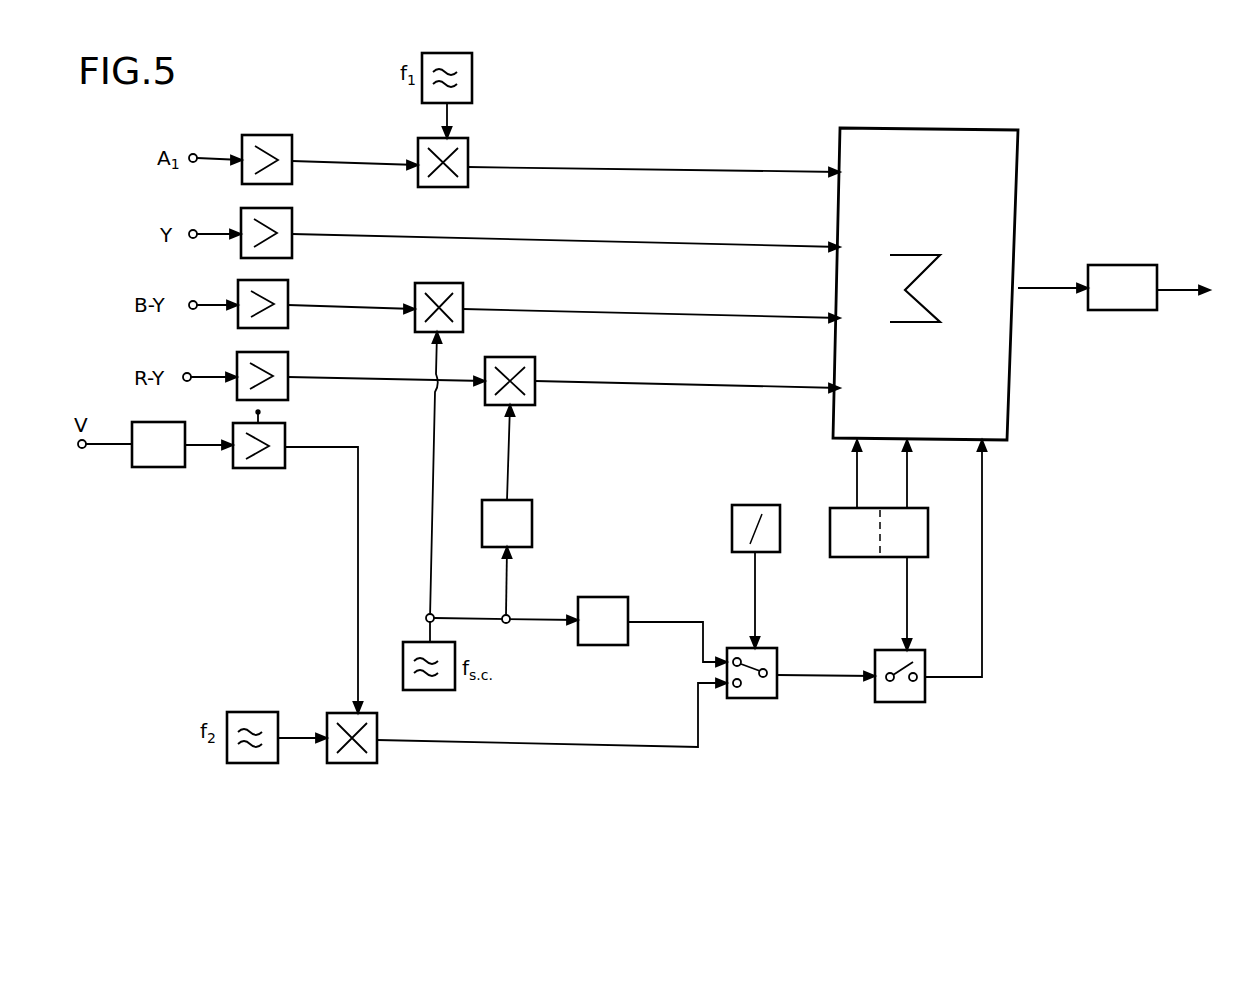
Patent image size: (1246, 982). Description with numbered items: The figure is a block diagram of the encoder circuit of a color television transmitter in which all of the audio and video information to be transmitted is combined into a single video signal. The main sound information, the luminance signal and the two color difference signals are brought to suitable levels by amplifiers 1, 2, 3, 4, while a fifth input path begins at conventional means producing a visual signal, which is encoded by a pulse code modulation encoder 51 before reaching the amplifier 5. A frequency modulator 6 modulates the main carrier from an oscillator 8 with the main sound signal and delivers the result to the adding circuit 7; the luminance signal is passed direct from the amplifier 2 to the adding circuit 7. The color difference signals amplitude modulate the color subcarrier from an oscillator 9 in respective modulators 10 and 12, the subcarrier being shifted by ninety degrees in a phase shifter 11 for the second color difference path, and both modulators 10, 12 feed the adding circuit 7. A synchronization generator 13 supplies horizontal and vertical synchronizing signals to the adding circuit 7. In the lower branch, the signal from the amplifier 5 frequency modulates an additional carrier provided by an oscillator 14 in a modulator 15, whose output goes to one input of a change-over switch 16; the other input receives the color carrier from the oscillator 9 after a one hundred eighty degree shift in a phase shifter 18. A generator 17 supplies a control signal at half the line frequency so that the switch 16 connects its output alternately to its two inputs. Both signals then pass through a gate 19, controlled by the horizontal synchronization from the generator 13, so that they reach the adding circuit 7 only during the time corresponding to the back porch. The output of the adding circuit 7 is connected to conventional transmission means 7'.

The amplifier 1 is at (282, 152).
The amplifier 2 is at (282, 226).
The amplifier 3 is at (278, 297).
The amplifier 4 is at (278, 370).
The amplifier 5 is at (278, 441).
The PCM encoder 51 is at (158, 457).
The frequency modulator 6 is at (462, 160).
The adding circuit 7 is at (940, 273).
The transmission means 7' is at (1130, 260).
The oscillator 8 is at (468, 94).
The oscillator 9 is at (443, 651).
The modulator 10 is at (455, 300).
The phase shifter 11 is at (522, 507).
The modulator 12 is at (527, 375).
The synchronization generator 13 is at (868, 512).
The oscillator 14 is at (270, 721).
The modulator 15 is at (372, 731).
The change-over switch 16 is at (768, 657).
The generator 17 is at (770, 515).
The phase shifter 18 is at (618, 605).
The gate 19 is at (917, 655).